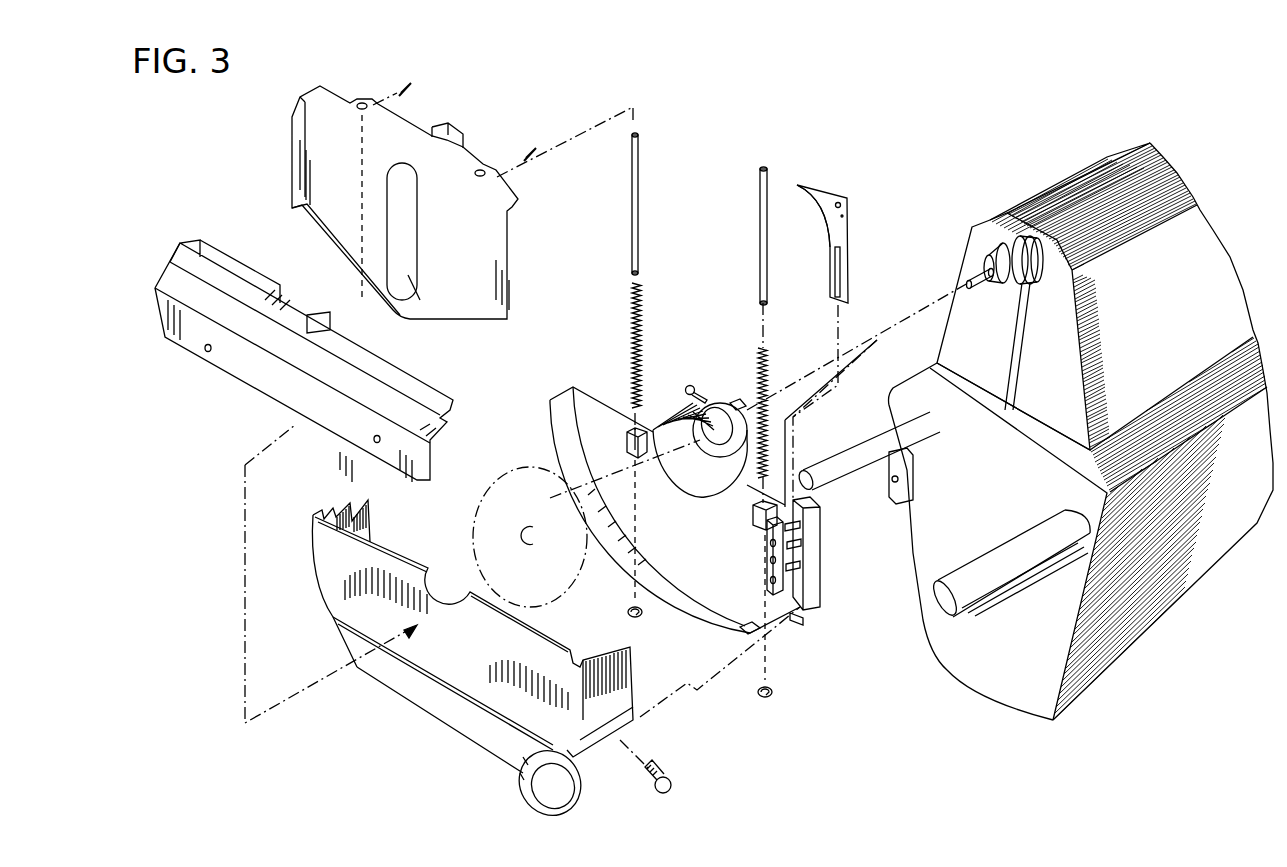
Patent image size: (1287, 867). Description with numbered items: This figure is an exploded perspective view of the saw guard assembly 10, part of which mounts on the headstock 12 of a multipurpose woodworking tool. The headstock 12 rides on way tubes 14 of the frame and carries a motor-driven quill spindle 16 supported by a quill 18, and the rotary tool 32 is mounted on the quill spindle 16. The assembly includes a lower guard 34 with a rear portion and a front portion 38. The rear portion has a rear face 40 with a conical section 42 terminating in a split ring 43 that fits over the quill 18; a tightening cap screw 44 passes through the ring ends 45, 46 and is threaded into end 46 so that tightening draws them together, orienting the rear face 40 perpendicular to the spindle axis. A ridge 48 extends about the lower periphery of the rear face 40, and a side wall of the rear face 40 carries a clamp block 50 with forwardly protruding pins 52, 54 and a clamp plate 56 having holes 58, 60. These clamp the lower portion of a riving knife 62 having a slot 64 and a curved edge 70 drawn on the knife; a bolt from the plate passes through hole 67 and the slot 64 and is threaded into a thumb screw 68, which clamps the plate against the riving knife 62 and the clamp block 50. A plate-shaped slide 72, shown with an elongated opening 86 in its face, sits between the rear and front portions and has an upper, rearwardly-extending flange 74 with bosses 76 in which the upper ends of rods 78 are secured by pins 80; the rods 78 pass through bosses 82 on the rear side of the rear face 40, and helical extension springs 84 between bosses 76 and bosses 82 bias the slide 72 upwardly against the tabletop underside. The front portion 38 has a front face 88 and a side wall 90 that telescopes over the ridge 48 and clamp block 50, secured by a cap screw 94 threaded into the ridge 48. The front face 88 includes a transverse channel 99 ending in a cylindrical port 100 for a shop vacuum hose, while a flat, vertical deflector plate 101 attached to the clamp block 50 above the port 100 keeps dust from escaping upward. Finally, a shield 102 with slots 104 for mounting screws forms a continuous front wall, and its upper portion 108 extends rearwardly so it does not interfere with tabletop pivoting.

The saw guard assembly 10 is at (743, 134).
The headstock 12 is at (1212, 240).
The way tubes 14 is at (838, 456).
The quill spindle 16 is at (979, 291).
The quill 18 is at (1038, 276).
The rotary tool 32 is at (504, 462).
The lower guard 34 is at (457, 742).
The front portion 38 is at (420, 683).
The rear face 40 is at (673, 522).
The conical section 42 is at (675, 430).
The split ring 43 is at (733, 457).
The tightening cap screw 44 is at (688, 386).
The end of the ring 45 is at (720, 403).
The end of the ring 46 is at (738, 403).
The ridge 48 is at (711, 598).
The clamp block 50 is at (822, 553).
The pin 52 is at (803, 527).
The pin 54 is at (804, 567).
The clamp plate 56 is at (766, 559).
The hole 58 is at (769, 544).
The hole 60 is at (745, 629).
The riving knife 62 is at (843, 233).
The slot 64 is at (842, 284).
The hole 67 is at (804, 546).
The thumb screw 68 is at (913, 489).
The curved edge 70 is at (821, 212).
The slide 72 is at (490, 281).
The flange 74 is at (388, 130).
The bosses 76 is at (362, 102).
The rods 78 is at (639, 200).
The pins 80 is at (405, 84).
The bosses 82 is at (627, 440).
The helical extension springs 84 is at (643, 300).
The slot 86 is at (410, 240).
The front face 88 is at (505, 663).
The side wall 90 is at (628, 685).
The cap screw 94 is at (673, 787).
The transverse channel 99 is at (485, 716).
The cylindrical port 100 is at (525, 778).
The deflector plate 101 is at (768, 578).
The shield 102 is at (228, 375).
The slots 104 is at (207, 352).
The upper portion 108 is at (398, 362).